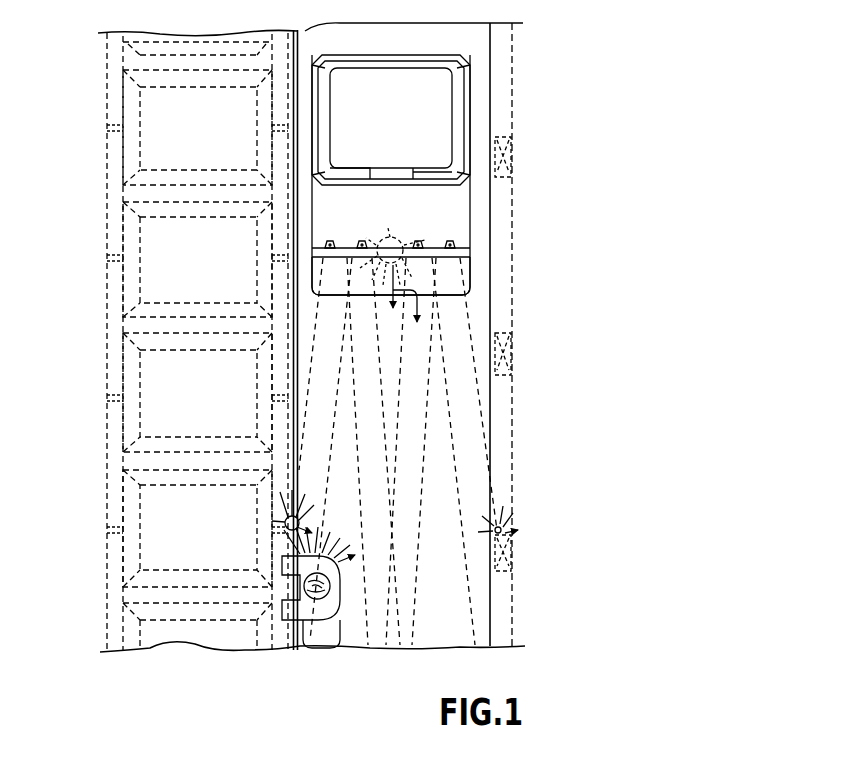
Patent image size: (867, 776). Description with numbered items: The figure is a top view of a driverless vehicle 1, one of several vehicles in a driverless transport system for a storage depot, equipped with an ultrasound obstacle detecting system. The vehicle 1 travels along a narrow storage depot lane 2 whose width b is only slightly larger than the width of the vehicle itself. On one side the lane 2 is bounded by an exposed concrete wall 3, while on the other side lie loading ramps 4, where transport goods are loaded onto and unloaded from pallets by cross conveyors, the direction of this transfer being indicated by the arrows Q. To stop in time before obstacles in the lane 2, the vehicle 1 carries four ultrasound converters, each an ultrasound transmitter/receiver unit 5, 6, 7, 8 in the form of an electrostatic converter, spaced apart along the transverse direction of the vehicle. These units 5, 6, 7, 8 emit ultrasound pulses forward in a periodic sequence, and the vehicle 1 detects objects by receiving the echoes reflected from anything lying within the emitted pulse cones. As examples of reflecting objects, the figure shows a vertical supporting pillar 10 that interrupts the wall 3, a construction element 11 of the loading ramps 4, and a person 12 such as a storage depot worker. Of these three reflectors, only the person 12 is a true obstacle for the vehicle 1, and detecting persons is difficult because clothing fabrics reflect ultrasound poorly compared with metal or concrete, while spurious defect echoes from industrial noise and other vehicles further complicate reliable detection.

The driverless vehicle 1 is at (456, 223).
The storage depot lane 2 is at (478, 300).
The wall 3 is at (503, 118).
The loading ramps 4 is at (112, 372).
The ultrasound transmitter/receiver unit 5 is at (329, 242).
The ultrasound transmitter/receiver unit 6 is at (361, 242).
The ultrasound transmitter/receiver unit 7 is at (418, 242).
The ultrasound transmitter/receiver unit 8 is at (449, 242).
The vertical supporting pillar 10 is at (510, 540).
The construction element 11 is at (283, 524).
The person 12 is at (332, 626).
The lane width b is at (300, 36).
The cross conveyor direction arrows Q is at (263, 93).